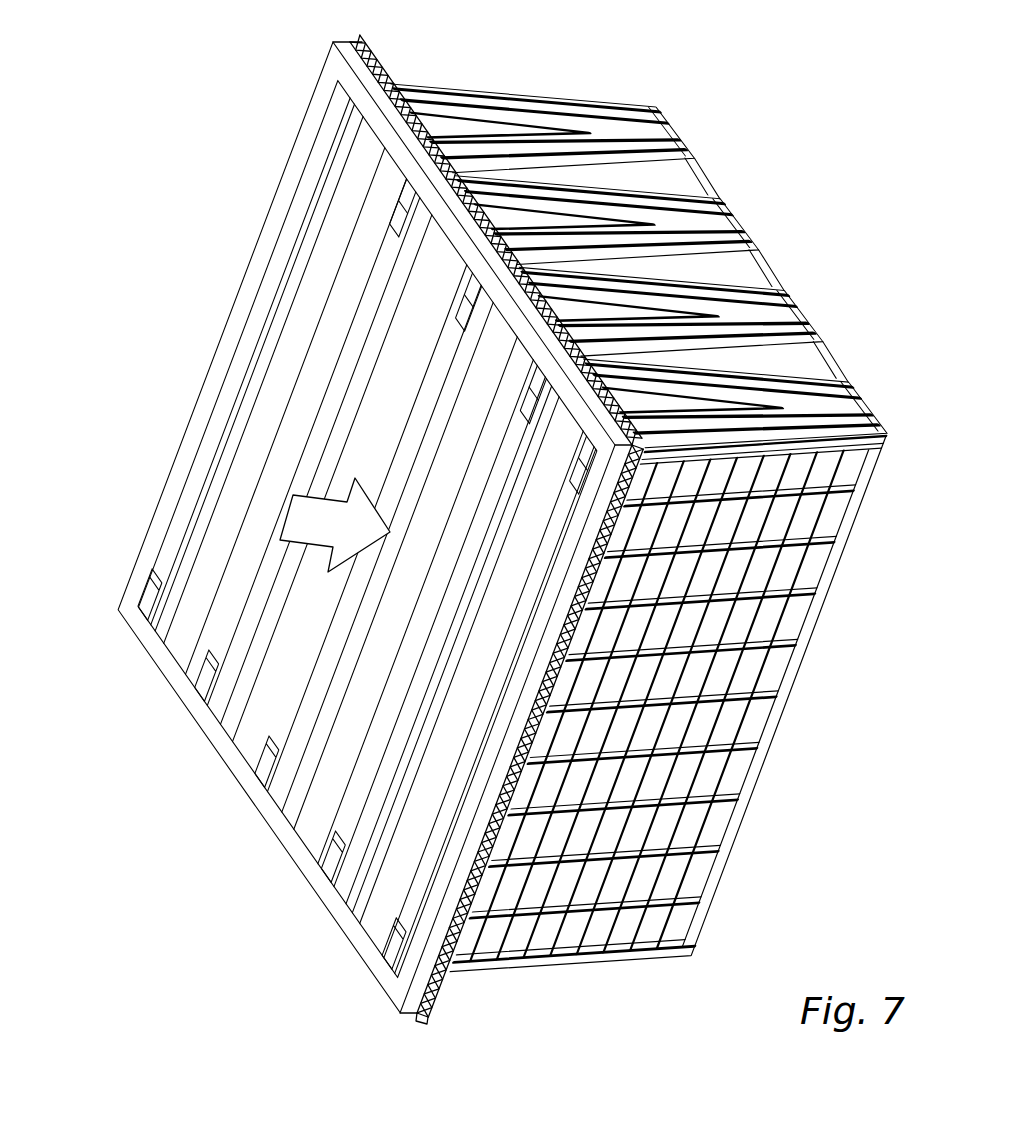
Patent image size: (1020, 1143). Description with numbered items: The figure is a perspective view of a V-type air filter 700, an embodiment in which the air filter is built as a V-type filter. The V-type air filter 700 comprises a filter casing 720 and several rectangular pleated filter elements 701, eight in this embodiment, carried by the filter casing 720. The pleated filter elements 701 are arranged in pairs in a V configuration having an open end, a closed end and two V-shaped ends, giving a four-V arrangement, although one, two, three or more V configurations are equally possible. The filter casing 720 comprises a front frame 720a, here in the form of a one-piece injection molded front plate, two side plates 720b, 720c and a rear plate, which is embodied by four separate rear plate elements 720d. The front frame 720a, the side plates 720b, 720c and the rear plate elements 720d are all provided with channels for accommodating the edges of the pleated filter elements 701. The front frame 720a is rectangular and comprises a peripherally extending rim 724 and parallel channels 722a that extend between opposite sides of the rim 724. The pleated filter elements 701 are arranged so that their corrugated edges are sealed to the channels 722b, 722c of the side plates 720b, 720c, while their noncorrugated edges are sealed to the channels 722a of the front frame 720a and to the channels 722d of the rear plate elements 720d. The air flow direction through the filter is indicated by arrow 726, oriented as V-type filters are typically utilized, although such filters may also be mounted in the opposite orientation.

The V-type air filter 700 is at (267, 103).
The pleated filter element 701 is at (290, 372).
The filter casing 720 is at (672, 127).
The front frame 720a is at (385, 985).
The side plate 720b is at (626, 100).
The side plate 720c is at (565, 975).
The rear plate element 720d is at (733, 213).
The channel 722a is at (180, 538).
The channel 722b is at (562, 105).
The channel 722c is at (645, 965).
The channel 722d is at (837, 548).
The rim 724 is at (433, 1000).
The arrow 726 is at (293, 495).